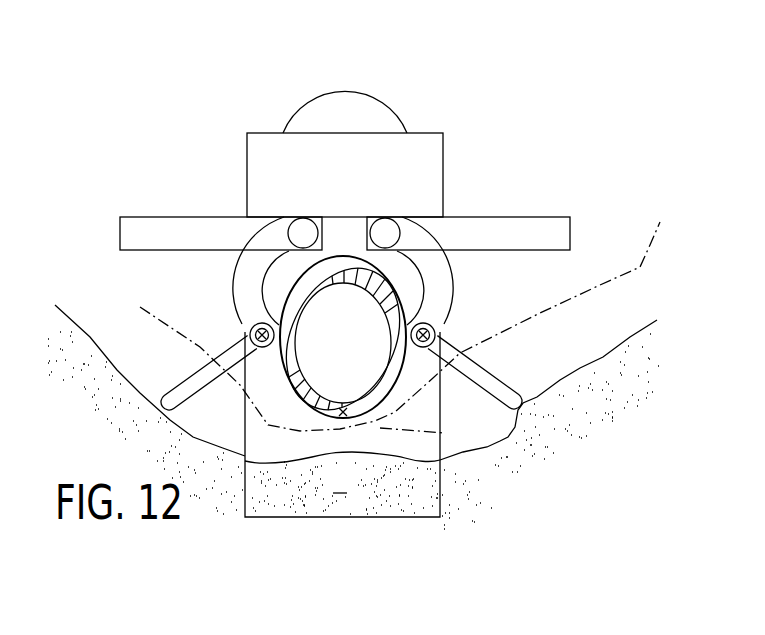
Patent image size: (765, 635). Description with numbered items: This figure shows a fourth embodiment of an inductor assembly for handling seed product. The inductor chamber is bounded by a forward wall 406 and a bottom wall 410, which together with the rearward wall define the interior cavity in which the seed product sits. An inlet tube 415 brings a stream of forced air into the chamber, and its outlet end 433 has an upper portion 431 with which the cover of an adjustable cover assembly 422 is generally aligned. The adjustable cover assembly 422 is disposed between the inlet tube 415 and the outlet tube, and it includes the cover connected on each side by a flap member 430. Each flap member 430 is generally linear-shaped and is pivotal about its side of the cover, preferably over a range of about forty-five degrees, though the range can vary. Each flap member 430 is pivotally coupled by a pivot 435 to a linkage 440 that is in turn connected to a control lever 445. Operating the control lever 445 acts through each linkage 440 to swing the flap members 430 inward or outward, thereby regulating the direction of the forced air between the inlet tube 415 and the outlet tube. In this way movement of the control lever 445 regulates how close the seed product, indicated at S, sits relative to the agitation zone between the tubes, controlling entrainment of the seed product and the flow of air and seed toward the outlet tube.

The forward wall 406 is at (437, 476).
The bottom wall 410 is at (422, 518).
The inlet tube 415 is at (345, 91).
The adjustable cover assembly 422 is at (466, 198).
The flap member 430 is at (187, 380).
The upper portion 431 is at (348, 262).
The outlet end 433 is at (400, 268).
The pivot 435 is at (250, 328).
The linkage 440 is at (235, 300).
The control lever 445 is at (188, 217).
The surface S is at (409, 318).